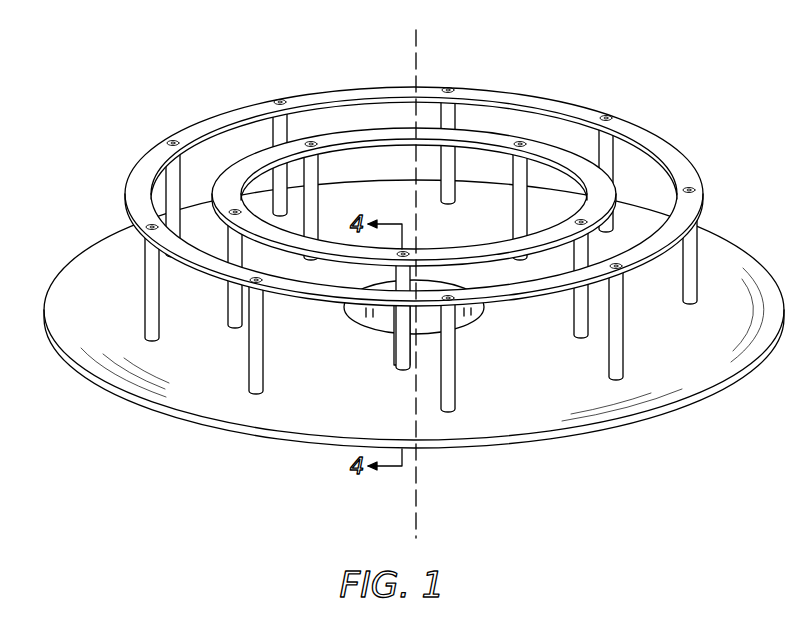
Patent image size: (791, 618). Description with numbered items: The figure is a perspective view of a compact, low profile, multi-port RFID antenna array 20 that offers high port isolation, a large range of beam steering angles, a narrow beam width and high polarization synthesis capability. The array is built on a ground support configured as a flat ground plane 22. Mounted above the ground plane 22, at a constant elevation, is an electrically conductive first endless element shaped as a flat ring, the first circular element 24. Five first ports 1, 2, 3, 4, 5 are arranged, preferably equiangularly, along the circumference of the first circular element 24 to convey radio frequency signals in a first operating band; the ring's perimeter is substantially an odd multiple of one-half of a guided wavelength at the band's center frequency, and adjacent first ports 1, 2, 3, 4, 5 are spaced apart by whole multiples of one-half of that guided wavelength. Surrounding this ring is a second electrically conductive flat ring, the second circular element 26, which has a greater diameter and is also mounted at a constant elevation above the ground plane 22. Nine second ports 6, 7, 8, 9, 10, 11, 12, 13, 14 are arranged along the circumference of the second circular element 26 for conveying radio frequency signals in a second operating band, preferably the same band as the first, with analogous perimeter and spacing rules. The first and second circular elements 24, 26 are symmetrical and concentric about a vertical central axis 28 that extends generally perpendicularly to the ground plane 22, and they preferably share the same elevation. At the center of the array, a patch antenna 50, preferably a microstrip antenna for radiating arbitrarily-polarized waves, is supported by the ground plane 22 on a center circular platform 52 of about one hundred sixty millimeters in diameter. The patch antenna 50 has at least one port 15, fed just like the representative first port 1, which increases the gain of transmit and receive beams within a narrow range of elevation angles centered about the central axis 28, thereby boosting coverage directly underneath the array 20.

The antenna array 20 is at (68, 42).
The ground plane 22 is at (60, 302).
The first circular element 24 is at (555, 142).
The second circular element 26 is at (663, 138).
The central axis 28 is at (418, 53).
The first port 1 is at (383, 273).
The first port 2 is at (566, 257).
The first port 3 is at (505, 165).
The first port 4 is at (330, 170).
The first port 5 is at (252, 258).
The second port 6 is at (467, 346).
The second port 7 is at (634, 304).
The second port 8 is at (704, 254).
The second port 9 is at (623, 160).
The second port 10 is at (463, 117).
The second port 11 is at (297, 125).
The second port 12 is at (185, 170).
The second port 13 is at (168, 303).
The second port 14 is at (276, 312).
The port 15 is at (418, 332).
The patch antenna 50 is at (385, 314).
The center circular platform 52 is at (478, 312).